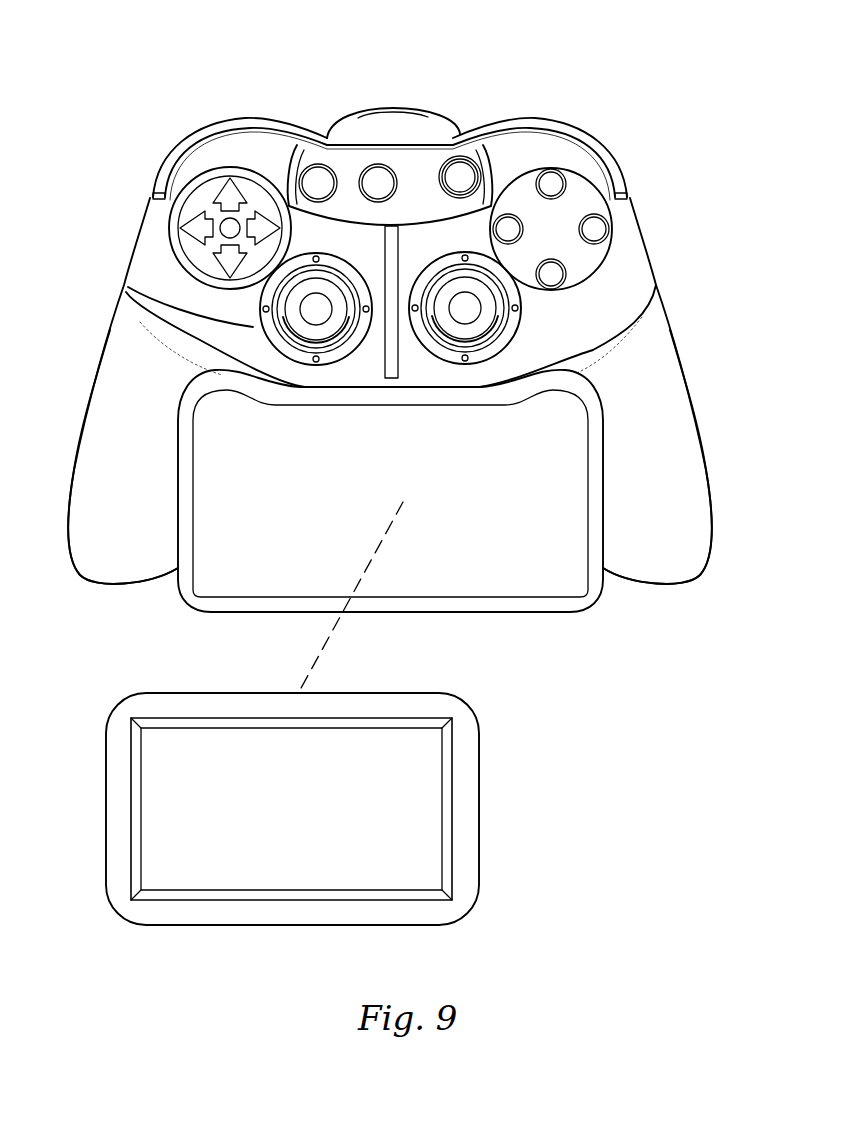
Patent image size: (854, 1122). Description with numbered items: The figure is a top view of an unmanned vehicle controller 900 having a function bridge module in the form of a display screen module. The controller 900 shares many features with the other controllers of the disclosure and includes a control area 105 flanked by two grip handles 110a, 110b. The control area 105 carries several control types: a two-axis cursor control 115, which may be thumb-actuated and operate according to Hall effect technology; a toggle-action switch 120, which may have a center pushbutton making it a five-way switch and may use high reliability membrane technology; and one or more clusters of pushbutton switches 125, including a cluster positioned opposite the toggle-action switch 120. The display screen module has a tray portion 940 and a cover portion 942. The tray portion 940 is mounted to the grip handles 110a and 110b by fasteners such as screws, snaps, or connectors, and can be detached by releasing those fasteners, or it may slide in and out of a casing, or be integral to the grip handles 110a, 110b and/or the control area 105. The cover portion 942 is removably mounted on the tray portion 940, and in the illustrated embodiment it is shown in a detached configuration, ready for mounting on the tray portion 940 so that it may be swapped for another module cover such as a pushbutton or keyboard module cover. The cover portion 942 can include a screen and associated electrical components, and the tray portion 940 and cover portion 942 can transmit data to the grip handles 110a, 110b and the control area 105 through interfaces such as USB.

The unmanned vehicle controller 900 is at (608, 75).
The control area 105 is at (628, 262).
The grip handle 110a is at (90, 548).
The grip handle 110b is at (703, 548).
The 2-axis cursor control 115 is at (287, 320).
The toggle-action switch 120 is at (192, 247).
The pushbutton switch 125 is at (315, 173).
The tray portion 940 is at (495, 590).
The cover portion 942 is at (400, 813).